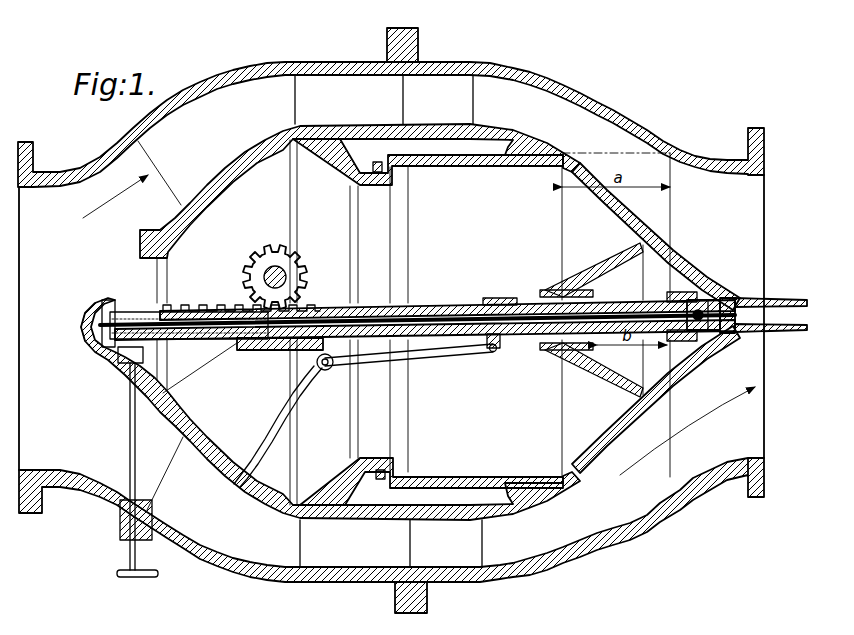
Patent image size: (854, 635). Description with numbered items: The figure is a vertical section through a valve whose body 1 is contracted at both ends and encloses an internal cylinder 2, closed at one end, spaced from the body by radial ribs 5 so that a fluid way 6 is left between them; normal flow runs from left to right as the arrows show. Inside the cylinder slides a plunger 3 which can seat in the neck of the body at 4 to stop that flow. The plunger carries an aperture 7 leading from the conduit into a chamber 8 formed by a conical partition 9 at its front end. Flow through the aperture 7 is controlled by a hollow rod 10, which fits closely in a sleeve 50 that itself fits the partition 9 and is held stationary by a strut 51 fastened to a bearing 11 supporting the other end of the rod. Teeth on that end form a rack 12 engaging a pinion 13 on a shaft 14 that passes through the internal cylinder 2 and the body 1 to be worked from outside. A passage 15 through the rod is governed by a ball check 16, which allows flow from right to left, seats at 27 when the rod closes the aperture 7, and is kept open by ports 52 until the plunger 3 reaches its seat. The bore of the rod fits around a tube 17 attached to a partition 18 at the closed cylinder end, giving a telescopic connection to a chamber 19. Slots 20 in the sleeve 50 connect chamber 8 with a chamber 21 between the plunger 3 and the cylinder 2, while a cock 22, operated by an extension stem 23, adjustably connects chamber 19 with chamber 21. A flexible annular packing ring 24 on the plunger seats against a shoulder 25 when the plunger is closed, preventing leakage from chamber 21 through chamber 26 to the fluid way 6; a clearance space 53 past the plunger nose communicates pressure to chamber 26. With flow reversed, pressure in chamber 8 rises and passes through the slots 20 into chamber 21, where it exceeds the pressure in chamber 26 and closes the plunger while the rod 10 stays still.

The body 1 is at (462, 61).
The internal cylinder 2 is at (413, 123).
The plunger 3 is at (500, 167).
The seat in the neck of the body 4 is at (673, 153).
The radial ribs 5 is at (351, 320).
The fluid way 6 is at (388, 321).
The aperture 7 is at (778, 312).
The chamber 8 is at (658, 275).
The conical partition 9 is at (610, 262).
The rod 10 is at (448, 306).
The bearing 11 is at (288, 351).
The rack 12 is at (178, 305).
The pinion 13 is at (265, 253).
The shaft 14 is at (286, 273).
The passage 15 is at (518, 300).
The ball check 16 is at (712, 350).
The tube 17 is at (208, 310).
The partition 18 is at (114, 301).
The chamber 19 is at (95, 340).
The slots 20 is at (607, 299).
The chamber 21 is at (437, 240).
The stop valve or cock 22 is at (122, 362).
The extension stem 23 is at (129, 452).
The flexible annular packing ring 24 is at (381, 163).
The shoulder 25 is at (511, 147).
The chamber 26 is at (463, 481).
The ball seat 27 is at (720, 332).
The sleeve 50 is at (682, 294).
The strut 51 is at (428, 355).
The ports 52 is at (714, 300).
The clearance space 53 is at (562, 154).